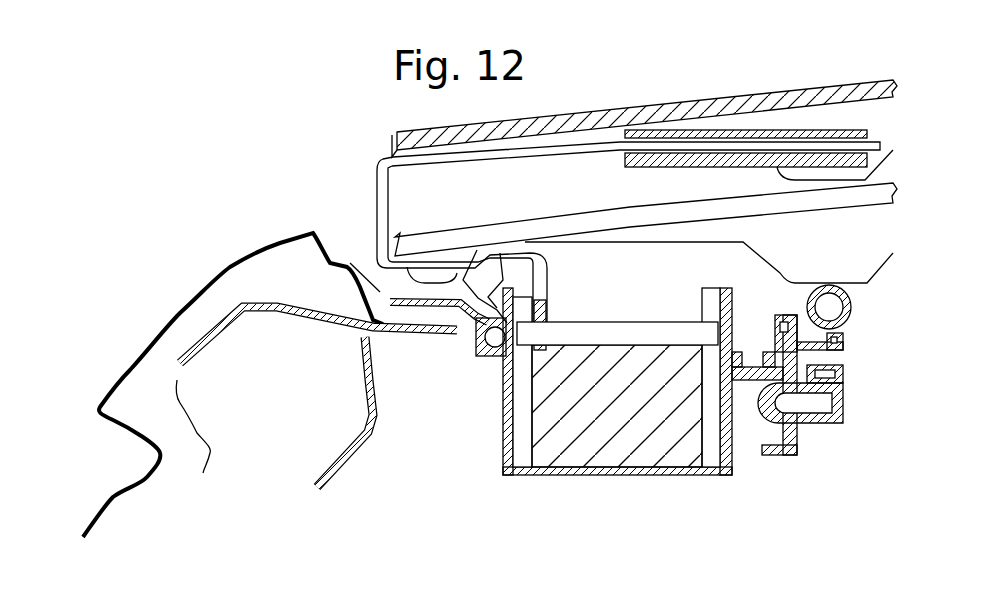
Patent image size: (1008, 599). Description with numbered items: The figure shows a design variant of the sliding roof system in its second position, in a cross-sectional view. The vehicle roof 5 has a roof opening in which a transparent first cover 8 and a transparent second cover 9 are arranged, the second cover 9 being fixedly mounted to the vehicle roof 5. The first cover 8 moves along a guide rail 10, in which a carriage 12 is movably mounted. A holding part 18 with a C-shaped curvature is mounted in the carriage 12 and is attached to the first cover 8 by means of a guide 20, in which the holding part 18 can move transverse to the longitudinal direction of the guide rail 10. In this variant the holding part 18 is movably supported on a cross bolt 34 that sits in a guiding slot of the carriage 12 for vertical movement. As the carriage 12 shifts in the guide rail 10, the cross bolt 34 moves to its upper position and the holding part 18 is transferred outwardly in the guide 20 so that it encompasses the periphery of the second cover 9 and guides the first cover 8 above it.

The vehicle roof 5 is at (241, 262).
The first cover 8 is at (773, 103).
The second cover 9 is at (850, 200).
The guide rail 10 is at (727, 467).
The carriage 12 is at (707, 417).
The holding part 18 is at (378, 183).
The guide 20 is at (717, 130).
The cross bolt 34 is at (577, 337).